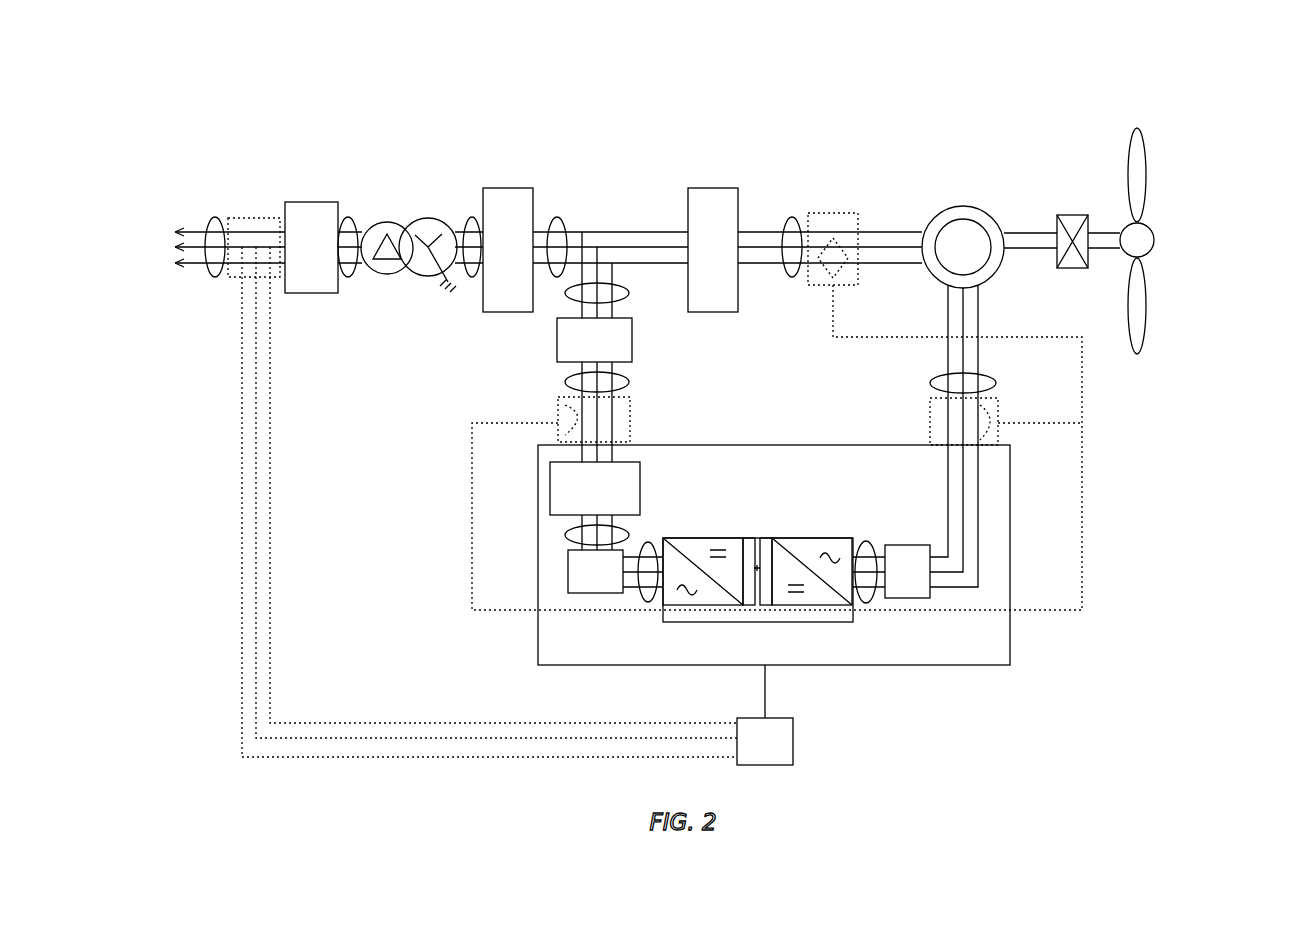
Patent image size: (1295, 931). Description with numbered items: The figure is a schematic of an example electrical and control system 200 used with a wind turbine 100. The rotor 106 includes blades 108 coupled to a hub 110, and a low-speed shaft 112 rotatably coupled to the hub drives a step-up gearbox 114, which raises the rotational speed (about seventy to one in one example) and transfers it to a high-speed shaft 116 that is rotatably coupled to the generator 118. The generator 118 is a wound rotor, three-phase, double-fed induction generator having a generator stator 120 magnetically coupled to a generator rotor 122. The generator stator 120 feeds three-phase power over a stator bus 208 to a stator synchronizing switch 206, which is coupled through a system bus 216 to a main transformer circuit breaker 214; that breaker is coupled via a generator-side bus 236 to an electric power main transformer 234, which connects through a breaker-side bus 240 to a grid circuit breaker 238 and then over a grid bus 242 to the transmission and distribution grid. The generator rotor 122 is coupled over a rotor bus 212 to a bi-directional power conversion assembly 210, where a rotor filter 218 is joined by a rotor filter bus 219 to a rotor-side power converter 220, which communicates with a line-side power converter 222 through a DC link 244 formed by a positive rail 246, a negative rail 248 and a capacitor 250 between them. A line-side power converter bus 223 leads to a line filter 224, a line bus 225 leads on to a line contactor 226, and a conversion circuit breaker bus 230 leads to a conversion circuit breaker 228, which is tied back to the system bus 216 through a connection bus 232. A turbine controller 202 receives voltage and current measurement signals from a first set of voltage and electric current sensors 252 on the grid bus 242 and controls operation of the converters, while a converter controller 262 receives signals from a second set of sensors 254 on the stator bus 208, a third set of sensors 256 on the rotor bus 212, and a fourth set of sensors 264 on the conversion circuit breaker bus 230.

The wind turbine 100 is at (1130, 118).
The rotor 106 is at (1166, 213).
The blades 108 is at (1150, 178).
The hub 110 is at (1158, 238).
The low-speed shaft 112 is at (1093, 232).
The step-up gearbox 114 is at (1068, 215).
The high-speed shaft 116 is at (1022, 232).
The generator 118 is at (962, 168).
The generator stator 120 is at (966, 207).
The generator rotor 122 is at (957, 232).
The electrical and control system 200 is at (265, 104).
The turbine controller 202 is at (748, 754).
The stator synchronizing switch 206 is at (712, 188).
The stator bus 208 is at (792, 218).
The bi-directional power conversion assembly 210 is at (1012, 562).
The rotor bus 212 is at (1000, 383).
The main transformer circuit breaker 214 is at (508, 188).
The system bus 216 is at (557, 218).
The rotor filter 218 is at (905, 548).
The rotor filter bus 219 is at (869, 545).
The rotor-side power converter 220 is at (863, 606).
The line-side power converter 222 is at (668, 606).
The line-side power converter bus 223 is at (643, 545).
The line filter 224 is at (568, 568).
The line bus 225 is at (566, 535).
The line contactor 226 is at (550, 490).
The conversion circuit breaker 228 is at (632, 340).
The conversion circuit breaker bus 230 is at (630, 383).
The connection bus 232 is at (622, 295).
The electric power main transformer 234 is at (427, 220).
The generator-side bus 236 is at (468, 212).
The grid circuit breaker 238 is at (297, 202).
The breaker-side bus 240 is at (350, 218).
The grid bus 242 is at (215, 220).
The DC link 244 is at (741, 500).
The positive rail 246 is at (760, 540).
The negative rail 248 is at (768, 600).
The capacitor 250 is at (752, 565).
The first set of voltage and electric current sensors 252 is at (232, 285).
The second set of voltage and electric current sensors 254 is at (846, 214).
The third set of voltage and electric current sensors 256 is at (913, 420).
The converter controller 262 is at (808, 615).
The fourth set of voltage and electric current sensors 264 is at (632, 425).